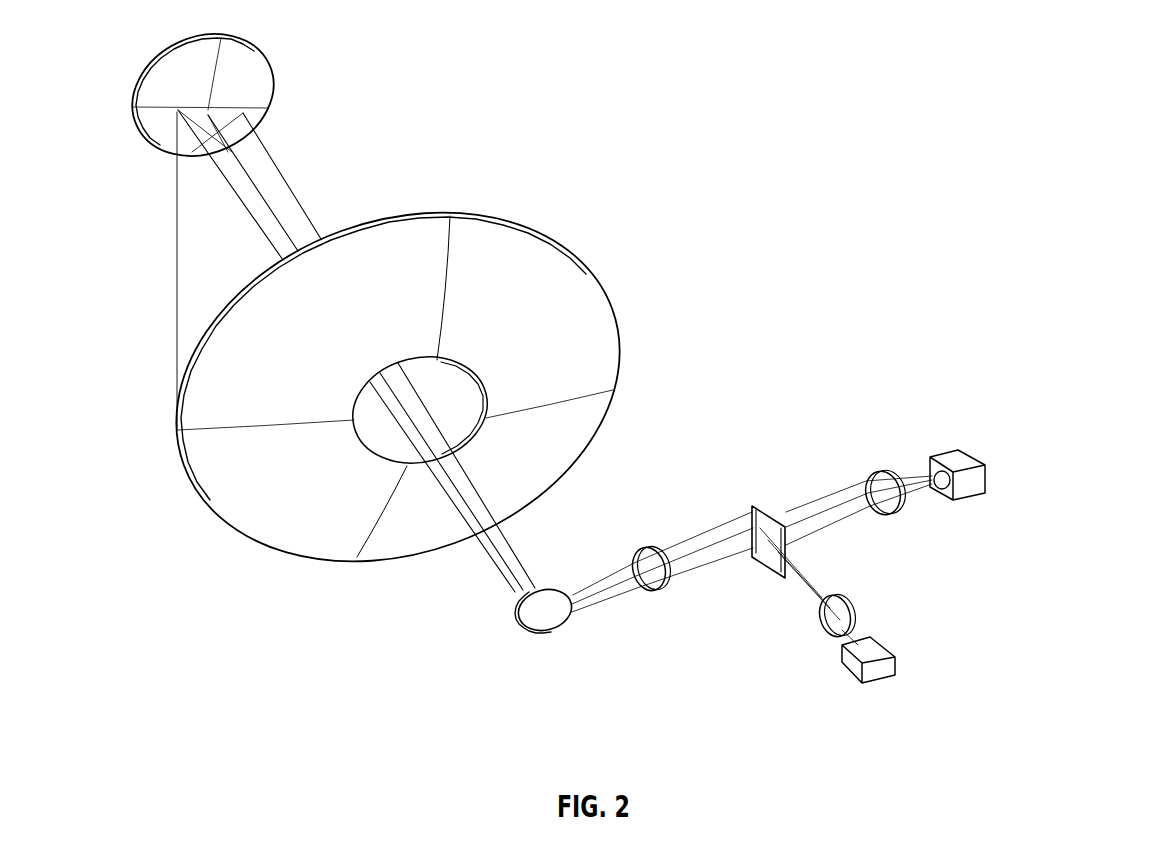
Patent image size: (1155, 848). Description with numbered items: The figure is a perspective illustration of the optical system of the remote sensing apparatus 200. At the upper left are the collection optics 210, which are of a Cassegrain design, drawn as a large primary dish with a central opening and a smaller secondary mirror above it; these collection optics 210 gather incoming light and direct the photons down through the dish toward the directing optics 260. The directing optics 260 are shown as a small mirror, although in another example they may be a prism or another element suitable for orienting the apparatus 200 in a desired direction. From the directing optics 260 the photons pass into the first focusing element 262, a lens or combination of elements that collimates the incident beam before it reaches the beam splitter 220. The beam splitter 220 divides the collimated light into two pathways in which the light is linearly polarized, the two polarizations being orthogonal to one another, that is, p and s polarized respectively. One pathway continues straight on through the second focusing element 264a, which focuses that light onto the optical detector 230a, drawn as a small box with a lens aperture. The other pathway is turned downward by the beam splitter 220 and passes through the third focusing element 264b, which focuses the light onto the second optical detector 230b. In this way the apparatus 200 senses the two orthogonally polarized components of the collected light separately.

The remote sensing apparatus 200 is at (711, 78).
The collection optics 210 is at (133, 246).
The directing optics 260 is at (518, 620).
The first focusing element 262 is at (647, 545).
The beam splitter 220 is at (753, 506).
The second focusing element 264a is at (886, 475).
The third focusing element 264b is at (822, 620).
The optical detector 230a is at (973, 480).
The optical detector 230b is at (892, 675).